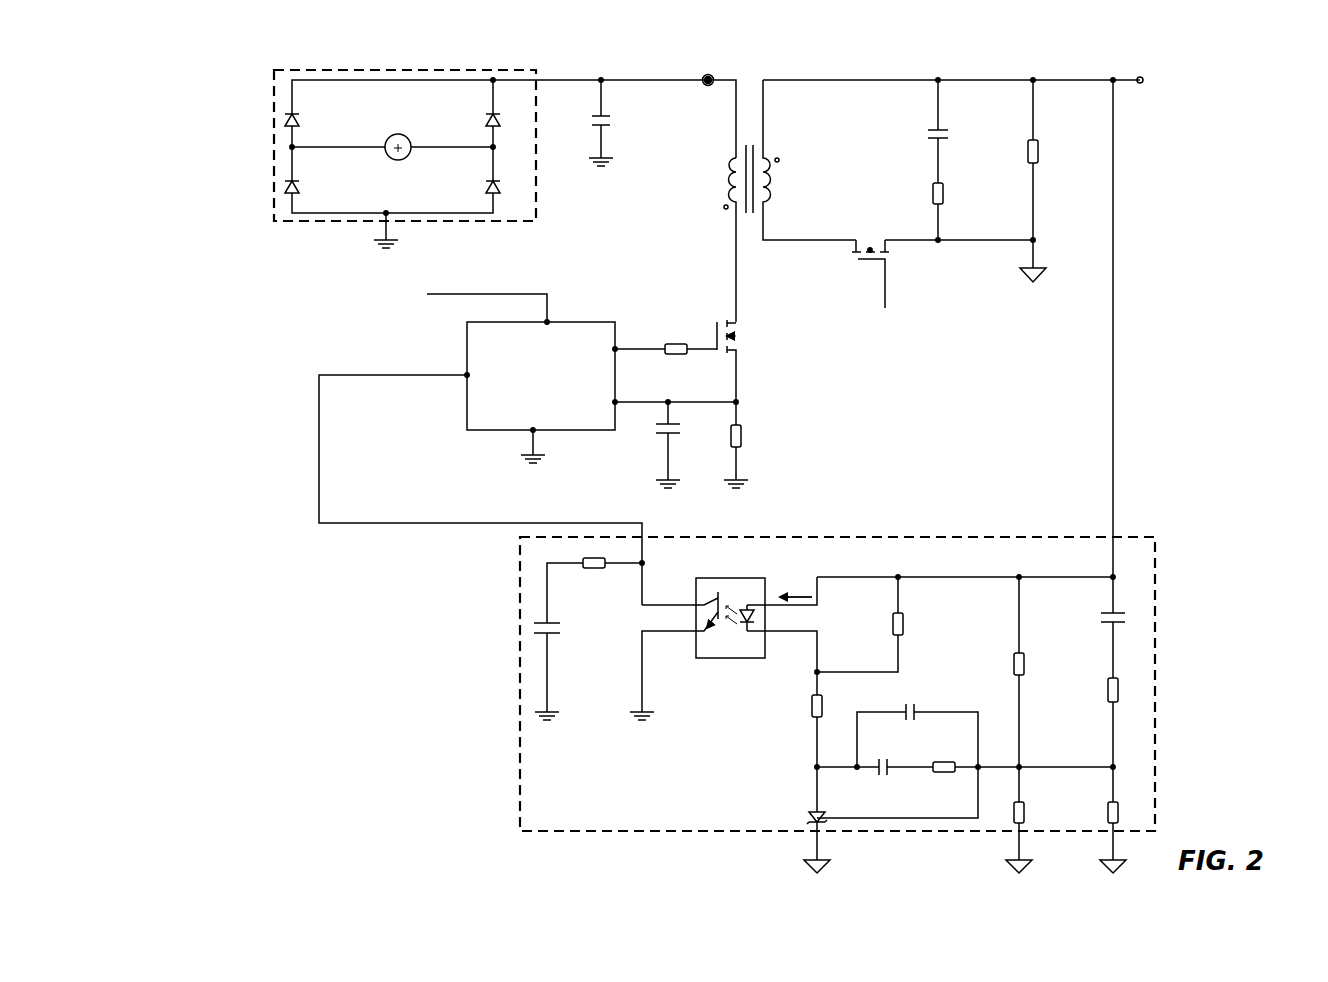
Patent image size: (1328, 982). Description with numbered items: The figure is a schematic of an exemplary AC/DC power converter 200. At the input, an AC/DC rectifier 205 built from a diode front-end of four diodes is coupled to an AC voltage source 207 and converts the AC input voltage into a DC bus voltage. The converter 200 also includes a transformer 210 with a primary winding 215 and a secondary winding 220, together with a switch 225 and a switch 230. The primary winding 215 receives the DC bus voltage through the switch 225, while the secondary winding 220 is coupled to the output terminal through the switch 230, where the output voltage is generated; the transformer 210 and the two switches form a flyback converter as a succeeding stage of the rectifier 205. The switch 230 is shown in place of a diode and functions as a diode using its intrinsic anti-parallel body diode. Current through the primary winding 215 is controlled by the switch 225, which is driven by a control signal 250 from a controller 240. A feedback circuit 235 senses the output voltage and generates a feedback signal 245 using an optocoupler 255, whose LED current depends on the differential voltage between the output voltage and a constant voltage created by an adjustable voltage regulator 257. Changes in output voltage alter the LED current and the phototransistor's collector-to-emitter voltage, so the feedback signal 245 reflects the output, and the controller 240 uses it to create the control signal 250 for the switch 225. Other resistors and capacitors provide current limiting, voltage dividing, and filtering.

The AC/DC power converter 200 is at (236, 84).
The AC/DC rectifier 205 is at (393, 68).
The AC voltage source 207 is at (396, 166).
The transformer 210 is at (751, 70).
The primary winding 215 is at (727, 163).
The secondary winding 220 is at (784, 160).
The switch 225 is at (745, 357).
The switch 230 is at (891, 277).
The feedback circuit 235 is at (517, 678).
The controller 240 is at (579, 318).
The feedback signal 245 is at (411, 380).
The control signal 250 is at (631, 358).
The optocoupler 255 is at (727, 668).
The adjustable voltage regulator 257 is at (811, 806).